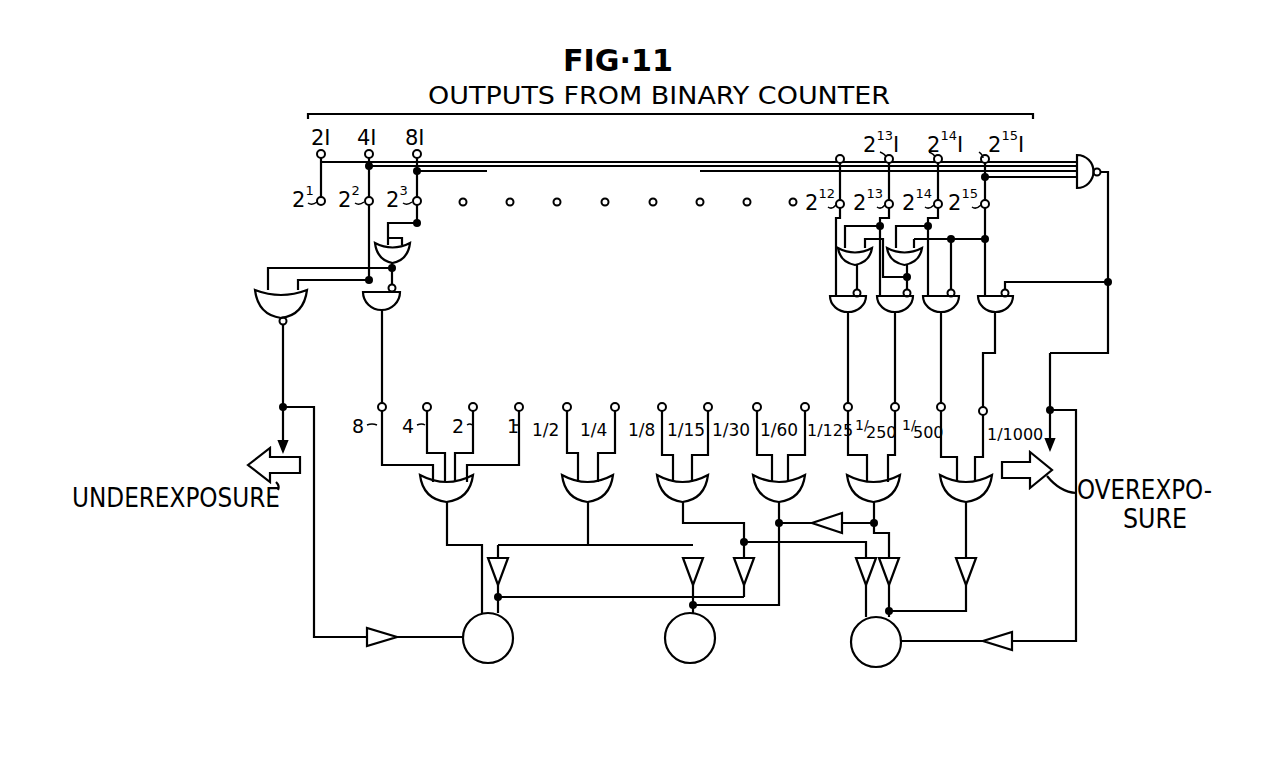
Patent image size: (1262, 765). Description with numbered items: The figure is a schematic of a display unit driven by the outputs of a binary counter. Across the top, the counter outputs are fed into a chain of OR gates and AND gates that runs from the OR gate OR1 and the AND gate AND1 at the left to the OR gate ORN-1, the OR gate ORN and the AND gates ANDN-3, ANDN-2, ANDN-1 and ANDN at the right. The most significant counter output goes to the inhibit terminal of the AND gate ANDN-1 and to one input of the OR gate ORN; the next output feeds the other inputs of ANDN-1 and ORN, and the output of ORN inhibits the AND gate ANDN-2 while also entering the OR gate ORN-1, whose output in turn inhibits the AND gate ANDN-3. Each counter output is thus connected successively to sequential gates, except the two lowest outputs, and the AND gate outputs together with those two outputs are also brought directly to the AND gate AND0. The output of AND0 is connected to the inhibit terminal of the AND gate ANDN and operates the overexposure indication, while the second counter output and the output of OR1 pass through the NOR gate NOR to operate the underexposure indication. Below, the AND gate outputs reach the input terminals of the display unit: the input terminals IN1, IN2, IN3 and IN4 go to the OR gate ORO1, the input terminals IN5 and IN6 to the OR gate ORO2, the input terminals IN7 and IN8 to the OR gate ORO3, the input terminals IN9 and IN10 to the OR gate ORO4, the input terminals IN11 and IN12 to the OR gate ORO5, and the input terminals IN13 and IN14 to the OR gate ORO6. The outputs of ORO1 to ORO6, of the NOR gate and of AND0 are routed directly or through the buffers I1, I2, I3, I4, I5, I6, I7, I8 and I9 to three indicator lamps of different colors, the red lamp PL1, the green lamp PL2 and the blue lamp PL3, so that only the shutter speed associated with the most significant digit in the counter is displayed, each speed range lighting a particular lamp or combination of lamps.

The NOR gate NOR is at (255, 301).
The OR gate OR1 is at (411, 250).
The AND gate AND1 is at (399, 303).
The AND gate AND0 is at (1080, 159).
The OR gate ORN-1 is at (838, 257).
The OR gate ORN is at (923, 257).
The AND gate ANDN-3 is at (830, 300).
The AND gate ANDN-2 is at (885, 311).
The AND gate ANDN-1 is at (930, 312).
The AND gate ANDN is at (1013, 305).
The OR gate ORO1 is at (437, 502).
The OR gate ORO2 is at (575, 502).
The OR gate ORO3 is at (672, 502).
The OR gate ORO4 is at (765, 502).
The OR gate ORO5 is at (880, 502).
The OR gate ORO6 is at (978, 502).
The buffer I1 is at (380, 628).
The buffer I2 is at (506, 570).
The buffer I3 is at (685, 572).
The buffer I4 is at (750, 576).
The buffer I5 is at (819, 514).
The buffer I6 is at (859, 573).
The buffer I7 is at (898, 569).
The buffer I8 is at (974, 571).
The buffer I9 is at (1001, 632).
The indicator lamp PL1 is at (513, 639).
The indicator lamp PL2 is at (715, 639).
The indicator lamp PL3 is at (895, 659).
The input terminal IN1 is at (379, 404).
The input terminal IN2 is at (421, 395).
The input terminal IN3 is at (473, 395).
The input terminal IN4 is at (520, 395).
The input terminal IN5 is at (568, 395).
The input terminal IN6 is at (615, 395).
The input terminal IN7 is at (663, 395).
The input terminal IN8 is at (710, 395).
The input terminal IN9 is at (756, 395).
The input terminal IN10 is at (810, 395).
The input terminal IN11 is at (851, 404).
The input terminal IN12 is at (898, 404).
The input terminal IN13 is at (944, 403).
The input terminal IN14 is at (986, 408).